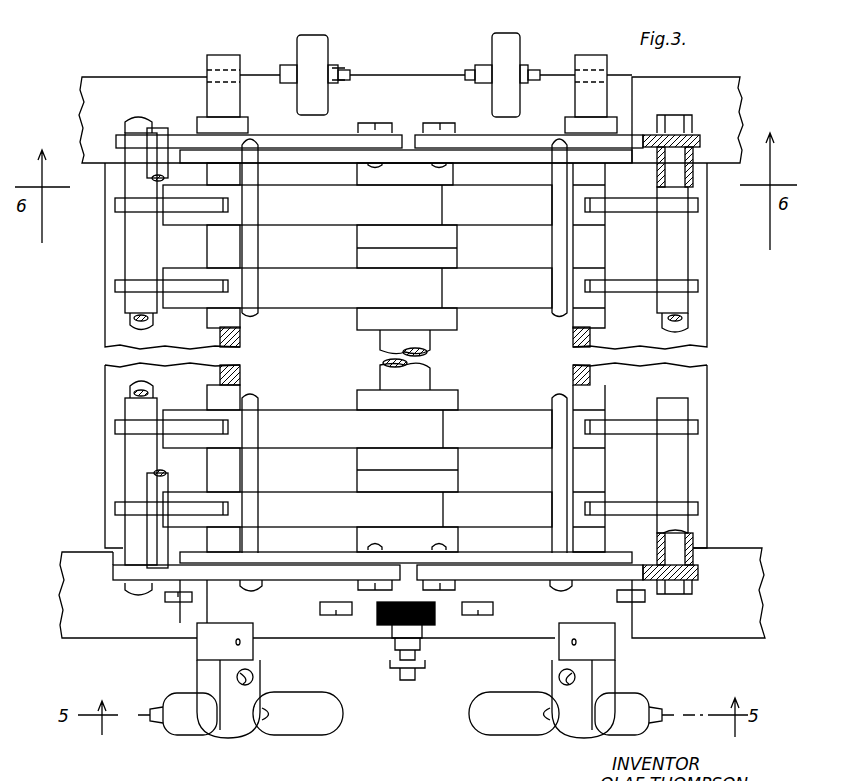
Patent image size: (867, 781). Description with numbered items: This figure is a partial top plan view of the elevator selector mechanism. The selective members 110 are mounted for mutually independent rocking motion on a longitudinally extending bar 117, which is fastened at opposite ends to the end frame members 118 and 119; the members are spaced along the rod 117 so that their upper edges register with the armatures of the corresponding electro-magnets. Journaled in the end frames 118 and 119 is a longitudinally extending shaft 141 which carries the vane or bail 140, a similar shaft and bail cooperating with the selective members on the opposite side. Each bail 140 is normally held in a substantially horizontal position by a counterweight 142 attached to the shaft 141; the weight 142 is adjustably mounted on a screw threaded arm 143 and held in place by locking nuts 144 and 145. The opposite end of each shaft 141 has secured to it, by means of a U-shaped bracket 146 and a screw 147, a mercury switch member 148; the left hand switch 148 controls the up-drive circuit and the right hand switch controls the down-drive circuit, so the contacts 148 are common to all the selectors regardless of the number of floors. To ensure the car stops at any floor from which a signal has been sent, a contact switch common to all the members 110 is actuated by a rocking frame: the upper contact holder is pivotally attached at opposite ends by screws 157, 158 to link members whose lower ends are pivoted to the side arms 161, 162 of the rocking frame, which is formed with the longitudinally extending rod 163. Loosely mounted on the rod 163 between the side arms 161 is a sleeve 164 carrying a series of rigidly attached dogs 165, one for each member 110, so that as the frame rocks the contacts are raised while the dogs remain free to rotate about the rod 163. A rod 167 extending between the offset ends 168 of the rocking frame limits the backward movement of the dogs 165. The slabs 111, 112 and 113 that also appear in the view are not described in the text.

The selective members 110 is at (357, 509).
The core section 111 is at (357, 429).
The core section 112 is at (357, 288).
The core section 113 is at (357, 205).
The longitudinally extending bar 117 is at (430, 367).
The end frame member 118 is at (522, 150).
The end frame member 119 is at (518, 563).
The vane or bail 140 is at (105, 351).
The longitudinally extending shaft 141 is at (217, 55).
The counterweight 142 is at (323, 34).
The screw threaded arm 143 is at (345, 72).
The locking nut 144 is at (290, 65).
The locking nut 145 is at (335, 82).
The U-shaped bracket 146 is at (197, 678).
The screw 147 is at (255, 677).
The mercury switch member 148 is at (303, 735).
The screw 157 is at (362, 612).
The screw 158 is at (500, 606).
The side arm 161 is at (642, 133).
The side arm 162 is at (258, 583).
The longitudinally extending rod 163 is at (150, 390).
The sleeve 164 is at (708, 200).
The dogs 165 is at (118, 428).
The rod 167 is at (167, 128).
The offset ends 168 is at (118, 115).